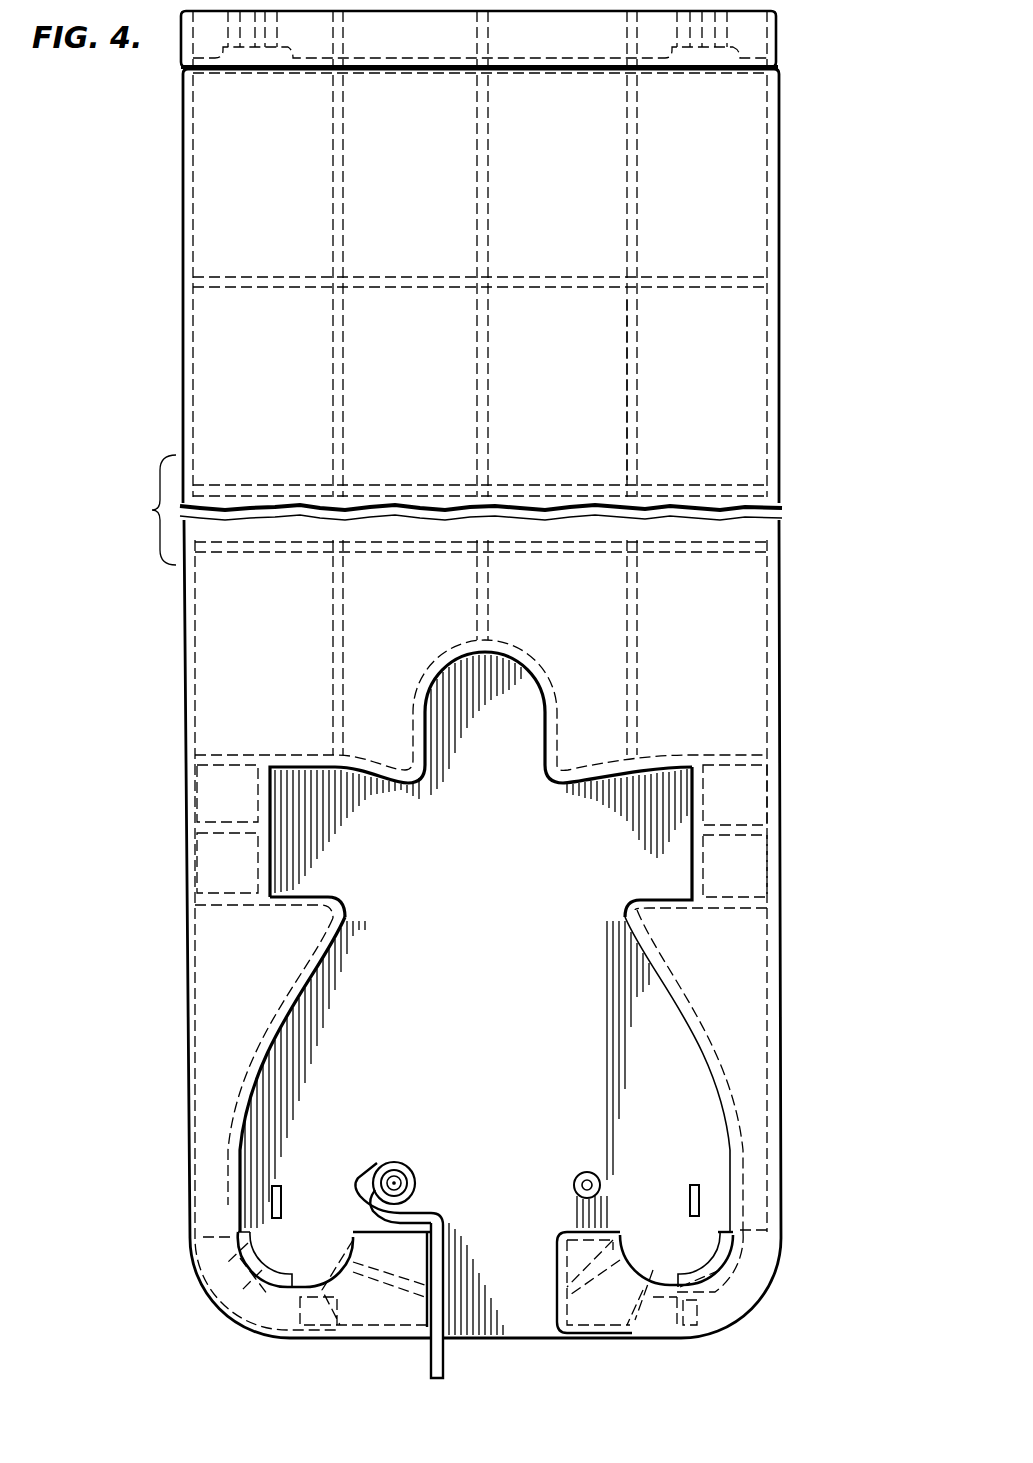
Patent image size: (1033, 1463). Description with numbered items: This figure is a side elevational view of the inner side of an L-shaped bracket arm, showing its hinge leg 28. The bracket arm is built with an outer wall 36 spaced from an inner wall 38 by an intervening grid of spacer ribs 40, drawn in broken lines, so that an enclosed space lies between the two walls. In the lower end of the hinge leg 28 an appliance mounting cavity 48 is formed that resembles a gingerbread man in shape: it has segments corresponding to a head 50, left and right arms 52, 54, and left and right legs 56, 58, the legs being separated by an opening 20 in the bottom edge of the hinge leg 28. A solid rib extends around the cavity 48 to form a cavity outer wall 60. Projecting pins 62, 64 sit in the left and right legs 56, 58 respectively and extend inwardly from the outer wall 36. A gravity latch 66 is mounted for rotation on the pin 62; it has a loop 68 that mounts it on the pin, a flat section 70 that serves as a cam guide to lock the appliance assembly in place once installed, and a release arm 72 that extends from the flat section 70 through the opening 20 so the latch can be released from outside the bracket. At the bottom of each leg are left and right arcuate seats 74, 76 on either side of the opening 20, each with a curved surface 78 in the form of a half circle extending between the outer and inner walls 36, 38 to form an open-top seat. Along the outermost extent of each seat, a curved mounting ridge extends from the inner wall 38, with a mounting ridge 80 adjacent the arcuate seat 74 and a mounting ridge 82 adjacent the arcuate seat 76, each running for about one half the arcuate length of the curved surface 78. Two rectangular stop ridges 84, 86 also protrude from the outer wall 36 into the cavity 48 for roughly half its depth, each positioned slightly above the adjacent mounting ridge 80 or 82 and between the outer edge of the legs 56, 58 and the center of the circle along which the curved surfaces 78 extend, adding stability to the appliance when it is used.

The opening 20 is at (537, 1320).
The hinge leg 28 is at (782, 617).
The outer wall 36 is at (660, 880).
The inner wall 38 is at (566, 205).
The spacer ribs 40 is at (640, 412).
The appliance mounting cavity 48 is at (500, 908).
The head 50 is at (516, 703).
The left arm 52 is at (303, 783).
The right arm 54 is at (664, 778).
The left leg 56 is at (272, 1160).
The right leg 58 is at (712, 1163).
The cavity outer wall 60 is at (333, 938).
The projecting pin 62 is at (396, 1175).
The projecting pin 64 is at (585, 1174).
The gravity latch 66 is at (440, 1217).
The loop 68 is at (410, 1178).
The flat section 70 is at (364, 1187).
The release arm 72 is at (445, 1283).
The left arcuate seat 74 is at (307, 1250).
The right arcuate seat 76 is at (667, 1265).
The curved surface 78 is at (347, 1252).
The mounting ridge 80 is at (250, 1258).
The mounting ridge 82 is at (706, 1270).
The stop ridge 84 is at (282, 1192).
The stop ridge 86 is at (688, 1195).